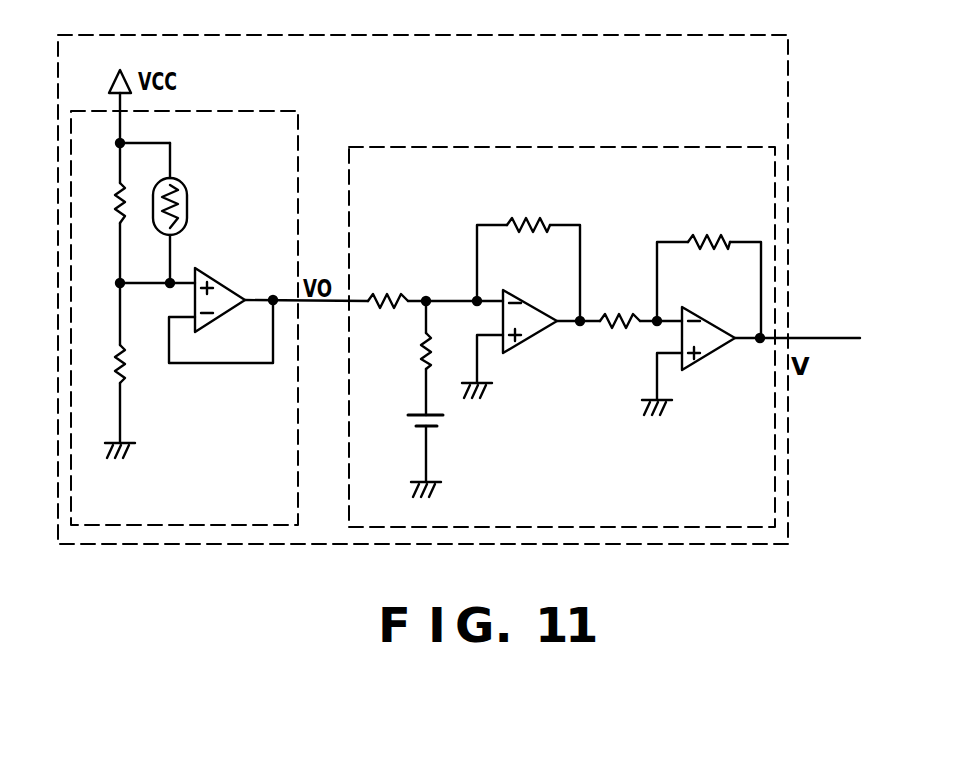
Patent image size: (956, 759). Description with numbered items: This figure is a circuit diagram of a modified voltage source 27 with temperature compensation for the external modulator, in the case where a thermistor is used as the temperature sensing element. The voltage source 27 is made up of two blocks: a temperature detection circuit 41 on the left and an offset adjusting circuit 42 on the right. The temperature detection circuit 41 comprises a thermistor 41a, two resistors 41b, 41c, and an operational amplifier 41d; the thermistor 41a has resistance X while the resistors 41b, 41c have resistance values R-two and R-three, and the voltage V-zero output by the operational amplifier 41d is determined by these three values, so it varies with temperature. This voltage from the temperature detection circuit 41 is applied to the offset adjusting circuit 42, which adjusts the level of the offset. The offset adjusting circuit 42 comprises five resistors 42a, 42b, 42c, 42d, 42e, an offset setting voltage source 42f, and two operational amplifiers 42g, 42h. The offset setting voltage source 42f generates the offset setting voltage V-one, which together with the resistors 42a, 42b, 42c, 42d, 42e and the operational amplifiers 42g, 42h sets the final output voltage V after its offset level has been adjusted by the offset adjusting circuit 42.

The voltage source with temperature compensation 27 is at (788, 79).
The temperature detection circuit 41 is at (226, 77).
The offset adjusting circuit 42 is at (505, 147).
The thermistor 41a is at (188, 204).
The resistor 41b is at (117, 185).
The resistor 41c is at (130, 368).
The operational amplifier 41d is at (227, 277).
The resistor 42a is at (392, 290).
The resistor 42b is at (410, 355).
The resistor 42c is at (532, 210).
The resistor 42d is at (620, 307).
The resistor 42e is at (705, 230).
The offset setting voltage source 42f is at (408, 428).
The operational amplifier 42g is at (532, 340).
The operational amplifier 42h is at (710, 355).